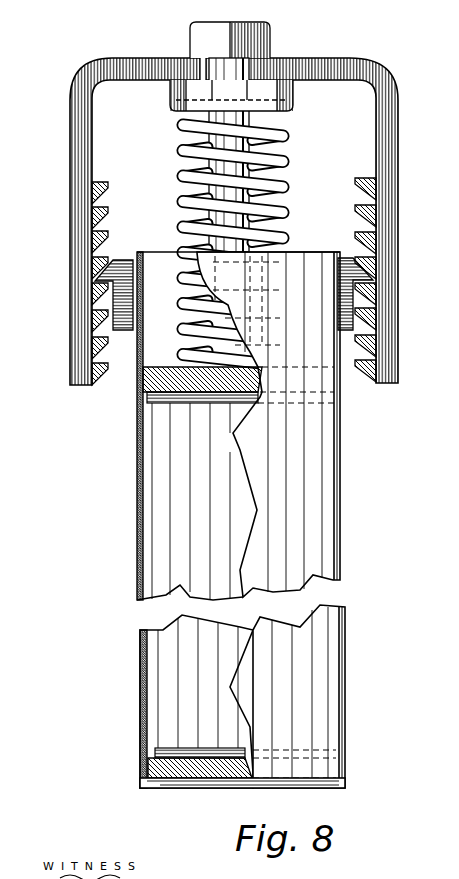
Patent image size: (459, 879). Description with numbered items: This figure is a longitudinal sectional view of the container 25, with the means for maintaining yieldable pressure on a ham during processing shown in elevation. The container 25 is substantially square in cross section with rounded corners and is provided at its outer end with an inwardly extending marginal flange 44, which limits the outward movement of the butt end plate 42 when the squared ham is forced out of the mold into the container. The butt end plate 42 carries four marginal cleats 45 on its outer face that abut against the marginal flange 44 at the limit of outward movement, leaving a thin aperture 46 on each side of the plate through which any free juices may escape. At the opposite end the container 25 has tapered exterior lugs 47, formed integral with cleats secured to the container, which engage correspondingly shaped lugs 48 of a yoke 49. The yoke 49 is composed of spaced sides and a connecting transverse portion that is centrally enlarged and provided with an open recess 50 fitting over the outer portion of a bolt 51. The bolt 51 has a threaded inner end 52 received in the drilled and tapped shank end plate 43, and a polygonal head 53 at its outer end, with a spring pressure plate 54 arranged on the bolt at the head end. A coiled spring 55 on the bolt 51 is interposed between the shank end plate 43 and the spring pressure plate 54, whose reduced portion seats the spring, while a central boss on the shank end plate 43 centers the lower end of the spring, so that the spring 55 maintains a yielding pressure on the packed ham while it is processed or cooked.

The container 25 is at (140, 523).
The butt end plate 42 is at (203, 762).
The shank end plate 43 is at (141, 392).
The marginal flange 44 is at (157, 785).
The marginal cleats 45 is at (203, 786).
The aperture 46 is at (150, 738).
The exterior lugs 47 is at (115, 278).
The lugs of the yoke 48 is at (365, 197).
The yoke 49 is at (110, 68).
The open recess 50 is at (204, 62).
The bolt 51 is at (232, 72).
The threaded inner end 52 is at (228, 404).
The polygonal head 53 is at (257, 32).
The spring pressure plate 54 is at (183, 104).
The coiled spring 55 is at (281, 136).